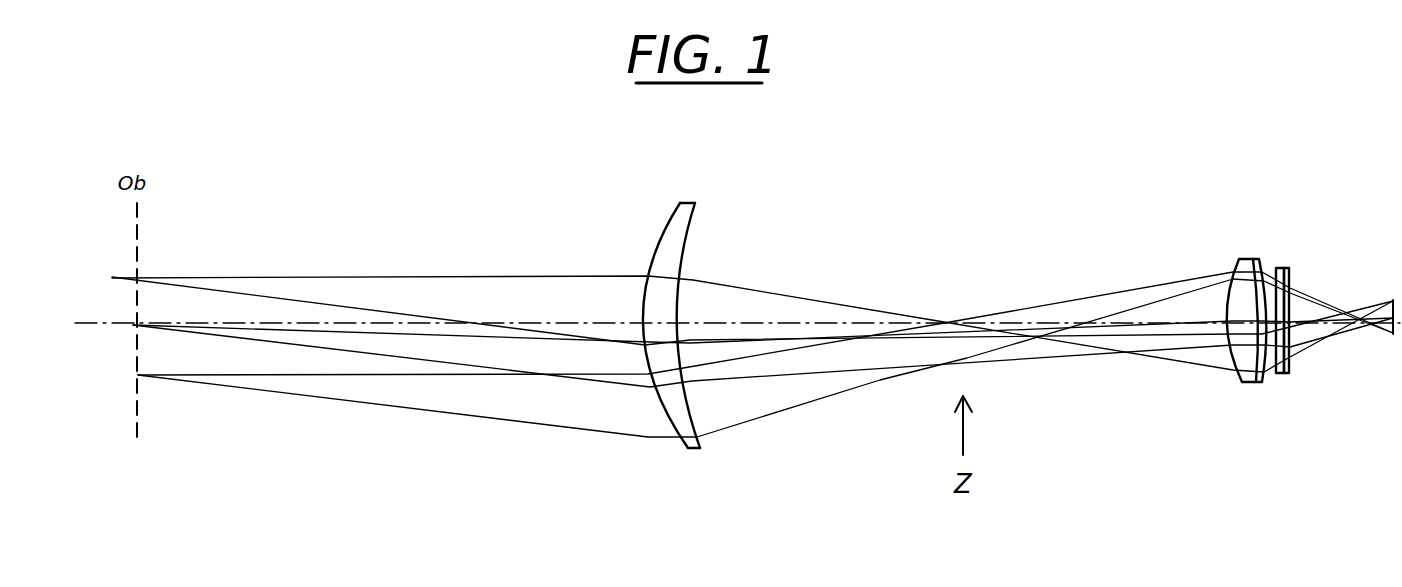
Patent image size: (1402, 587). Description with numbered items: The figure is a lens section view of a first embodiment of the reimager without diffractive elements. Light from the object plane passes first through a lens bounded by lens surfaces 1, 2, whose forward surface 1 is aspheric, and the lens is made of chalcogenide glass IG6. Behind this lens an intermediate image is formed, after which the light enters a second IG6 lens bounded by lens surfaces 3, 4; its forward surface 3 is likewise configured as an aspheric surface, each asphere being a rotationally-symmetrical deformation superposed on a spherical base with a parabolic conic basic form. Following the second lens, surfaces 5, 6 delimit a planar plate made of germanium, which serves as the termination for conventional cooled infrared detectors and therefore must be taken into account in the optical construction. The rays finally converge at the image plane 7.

The lens surface 1 is at (682, 441).
The lens surface 2 is at (697, 416).
The lens surface 3 is at (1233, 259).
The lens surface 4 is at (1266, 263).
The plate surface 5 is at (1278, 374).
The plate surface 6 is at (1289, 374).
The image plane 7 is at (1393, 335).